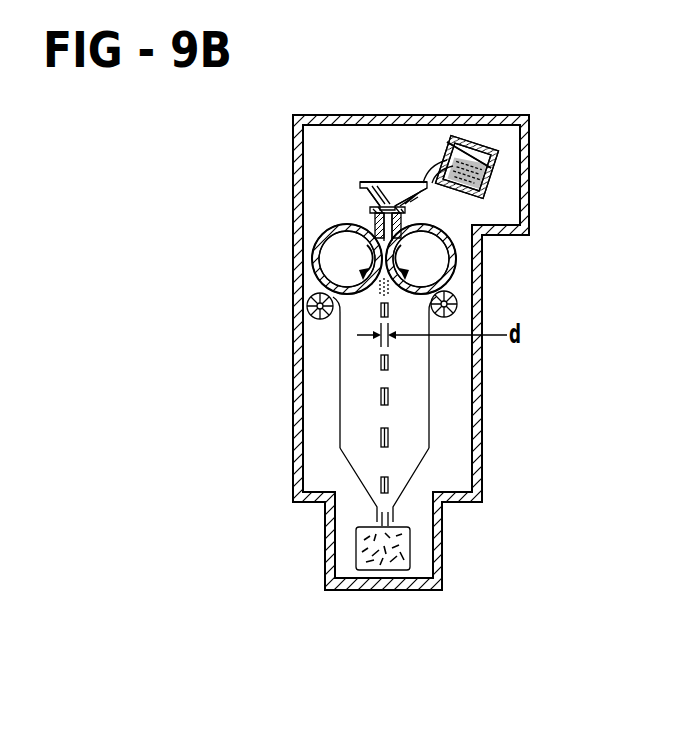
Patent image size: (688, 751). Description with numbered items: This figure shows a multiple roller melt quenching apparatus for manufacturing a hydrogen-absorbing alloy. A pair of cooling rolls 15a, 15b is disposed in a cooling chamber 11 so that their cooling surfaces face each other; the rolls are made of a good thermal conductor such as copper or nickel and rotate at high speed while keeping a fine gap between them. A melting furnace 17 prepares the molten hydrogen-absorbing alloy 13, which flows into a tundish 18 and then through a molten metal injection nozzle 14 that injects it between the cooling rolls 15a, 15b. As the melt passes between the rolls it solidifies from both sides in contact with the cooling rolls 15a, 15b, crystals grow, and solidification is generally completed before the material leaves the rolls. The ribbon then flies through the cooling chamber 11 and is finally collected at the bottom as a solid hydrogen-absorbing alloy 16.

The cooling chamber 11 is at (482, 405).
The molten hydrogen-absorbing alloy 13 is at (466, 140).
The molten metal injection nozzle 14 is at (372, 214).
The cooling roll 15a is at (313, 274).
The cooling roll 15b is at (457, 256).
The solid hydrogen-absorbing alloy 16 is at (410, 547).
The melting furnace 17 is at (490, 187).
The tundish 18 is at (360, 188).